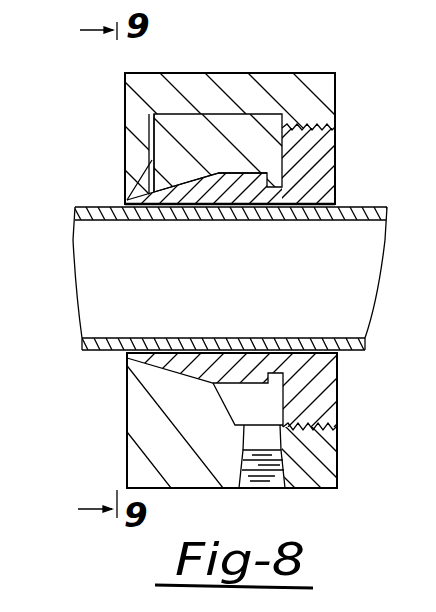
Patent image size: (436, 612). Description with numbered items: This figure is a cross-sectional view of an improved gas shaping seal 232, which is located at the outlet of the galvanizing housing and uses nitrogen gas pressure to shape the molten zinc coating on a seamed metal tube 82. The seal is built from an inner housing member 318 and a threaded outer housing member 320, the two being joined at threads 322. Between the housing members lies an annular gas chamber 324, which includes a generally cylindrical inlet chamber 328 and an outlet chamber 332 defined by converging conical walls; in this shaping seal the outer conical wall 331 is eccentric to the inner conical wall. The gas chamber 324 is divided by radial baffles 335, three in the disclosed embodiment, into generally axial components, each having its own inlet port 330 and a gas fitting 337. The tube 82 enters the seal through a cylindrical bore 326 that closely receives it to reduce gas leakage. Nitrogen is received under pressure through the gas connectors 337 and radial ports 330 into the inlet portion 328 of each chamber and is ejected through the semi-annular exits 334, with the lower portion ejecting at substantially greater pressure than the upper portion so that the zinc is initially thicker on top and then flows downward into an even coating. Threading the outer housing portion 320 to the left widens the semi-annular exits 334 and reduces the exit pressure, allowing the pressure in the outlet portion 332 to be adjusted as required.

The seamed metal tube 82 is at (167, 220).
The threaded outer housing member 320 is at (160, 92).
The threads 322 is at (333, 123).
The inner housing member 318 is at (322, 183).
The semi-annular exits 334 is at (145, 183).
The radial baffles 335 is at (197, 195).
The cylindrical bore 326 is at (221, 198).
The outer conical wall 331 is at (190, 100).
The gas shaping seal 232 is at (324, 62).
The gas fitting 337 is at (417, 97).
The annular gas chamber 324 is at (204, 393).
The outlet chamber 332 is at (172, 378).
The inlet chamber 328 is at (267, 408).
The inlet port 330 is at (263, 478).